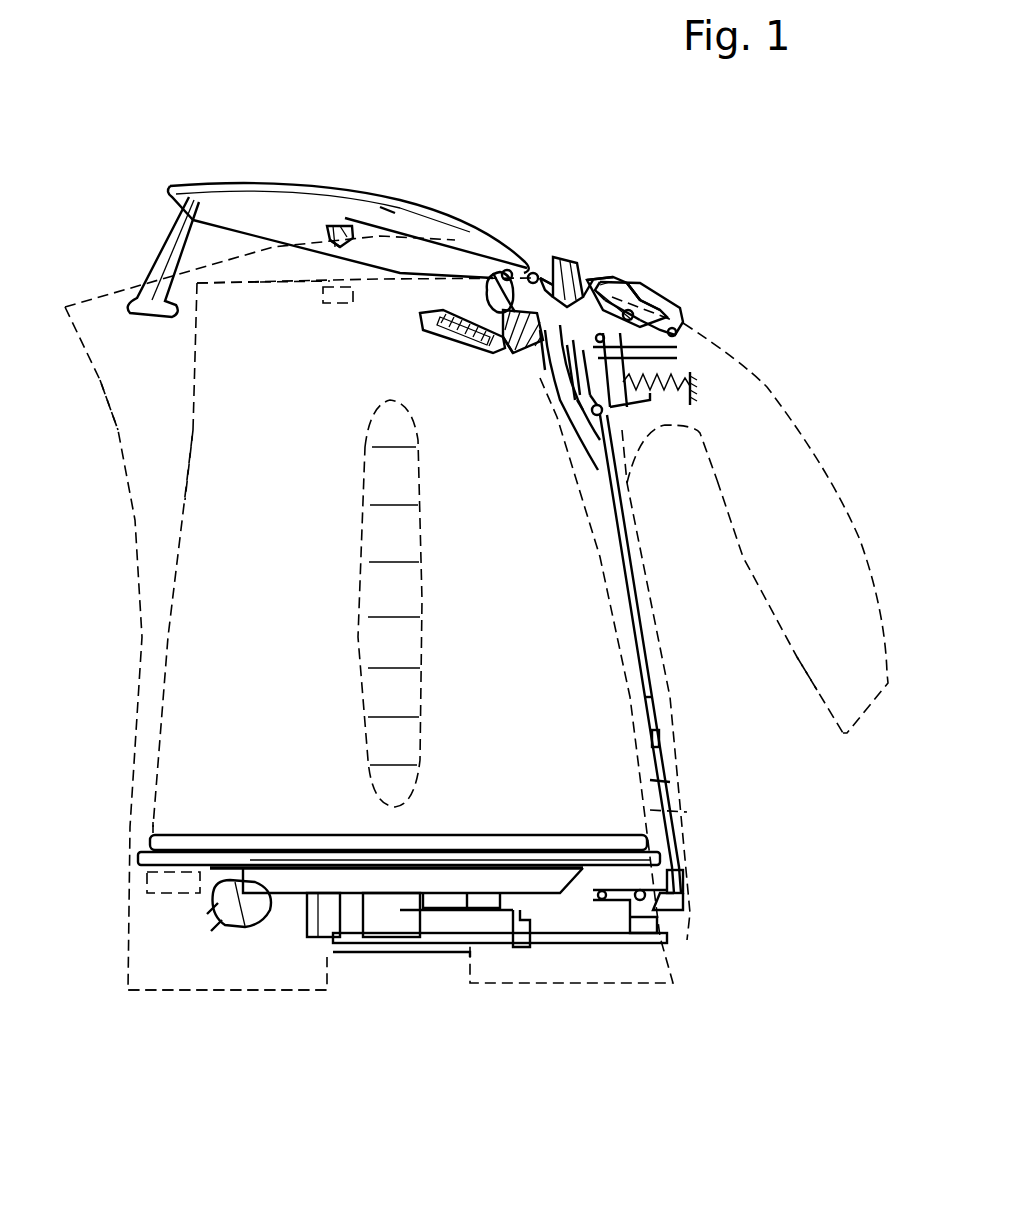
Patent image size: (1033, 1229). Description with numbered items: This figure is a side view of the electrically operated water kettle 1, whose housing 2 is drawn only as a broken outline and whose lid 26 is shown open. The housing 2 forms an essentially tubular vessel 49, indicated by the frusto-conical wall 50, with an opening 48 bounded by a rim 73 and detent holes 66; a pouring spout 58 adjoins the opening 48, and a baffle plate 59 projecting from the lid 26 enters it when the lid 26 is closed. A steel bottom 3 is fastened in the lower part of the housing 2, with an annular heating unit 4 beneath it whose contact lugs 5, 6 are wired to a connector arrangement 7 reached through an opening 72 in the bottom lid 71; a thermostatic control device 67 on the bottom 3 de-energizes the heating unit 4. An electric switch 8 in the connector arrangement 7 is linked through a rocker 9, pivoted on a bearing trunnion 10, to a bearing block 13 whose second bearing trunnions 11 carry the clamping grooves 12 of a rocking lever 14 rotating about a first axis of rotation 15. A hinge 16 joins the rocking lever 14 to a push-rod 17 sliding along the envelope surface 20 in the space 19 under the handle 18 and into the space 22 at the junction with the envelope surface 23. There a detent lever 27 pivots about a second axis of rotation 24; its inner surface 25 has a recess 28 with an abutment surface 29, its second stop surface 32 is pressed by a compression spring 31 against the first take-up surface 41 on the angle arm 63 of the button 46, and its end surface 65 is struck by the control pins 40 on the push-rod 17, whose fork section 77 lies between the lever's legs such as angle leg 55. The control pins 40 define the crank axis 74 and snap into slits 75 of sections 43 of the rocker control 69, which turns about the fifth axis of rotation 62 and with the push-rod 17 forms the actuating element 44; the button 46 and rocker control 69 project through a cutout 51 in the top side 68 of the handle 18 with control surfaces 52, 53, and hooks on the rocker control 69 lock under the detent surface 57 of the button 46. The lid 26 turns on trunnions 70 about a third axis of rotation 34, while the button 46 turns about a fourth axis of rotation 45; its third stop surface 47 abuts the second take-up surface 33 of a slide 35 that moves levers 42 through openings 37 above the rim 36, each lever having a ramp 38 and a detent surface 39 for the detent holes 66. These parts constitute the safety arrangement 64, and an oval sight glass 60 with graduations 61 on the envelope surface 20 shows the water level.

The water kettle 1 is at (167, 128).
The housing 2 is at (140, 692).
The bottom 3 is at (140, 837).
The heating unit 4 is at (293, 885).
The contact lug 5 is at (226, 930).
The contact lug 6 is at (210, 910).
The connector arrangement 7 is at (417, 945).
The electric switch 8 is at (382, 918).
The rocker 9 is at (452, 915).
The bearing trunnion 10 is at (523, 913).
The second bearing trunnions 11 is at (597, 900).
The clamping grooves 12 is at (593, 893).
The bearing block 13 is at (603, 905).
The rocking lever 14 is at (622, 902).
The first axis of rotation 15 is at (640, 902).
The hinge 16 is at (690, 890).
The push-rod 17 is at (647, 693).
The handle 18 is at (831, 670).
The space 19 is at (670, 750).
The envelope surface 20 is at (650, 810).
The space 22 is at (653, 418).
The envelope surface 23 is at (620, 652).
The second axis of rotation 24 is at (593, 457).
The inner surface 25 is at (553, 367).
The lid 26 is at (277, 180).
The detent lever 27 is at (567, 400).
The recess 28 is at (560, 385).
The abutment surface 29 is at (560, 423).
The compression spring 31 is at (687, 379).
The second stop surface 32 is at (578, 217).
The second take-up surface 33 is at (493, 273).
The third axis of rotation 34 is at (550, 270).
The slide 35 is at (447, 340).
The rim 36 is at (233, 210).
The openings 37 is at (380, 207).
The ramp 38 is at (337, 230).
The detent surface 39 is at (335, 225).
The control pins 40 is at (627, 283).
The first take-up surface 41 is at (550, 358).
The levers 42 is at (345, 229).
The sections 43 is at (677, 347).
The actuating element 44 is at (697, 311).
The fourth axis of rotation 45 is at (507, 270).
The button 46 is at (573, 262).
The third stop surface 47 is at (480, 353).
The opening 48 is at (240, 272).
The vessel 49 is at (203, 527).
The wall 50 is at (170, 600).
The cutout 51 is at (533, 272).
The control surface 52 is at (587, 267).
The control surface 53 is at (680, 300).
The angle leg 55 is at (630, 420).
The detent surface 57 is at (613, 280).
The pouring spout 58 is at (93, 298).
The baffle plate 59 is at (188, 242).
The sight glass 60 is at (368, 527).
The graduations 61 is at (395, 615).
The fifth axis of rotation 62 is at (668, 292).
The angle arm 63 is at (520, 348).
The safety arrangement 64 is at (571, 257).
The end surface 65 is at (677, 360).
The detent holes 66 is at (338, 302).
The thermostatic control device 67 is at (165, 883).
The top side 68 is at (813, 453).
The rocker control 69 is at (650, 285).
The trunnions 70 is at (546, 281).
The bottom lid 71 is at (163, 990).
The opening 72 is at (340, 968).
The rim 73 is at (285, 278).
The crank axis 74 is at (633, 291).
The slits 75 is at (573, 413).
The fork section 77 is at (575, 457).